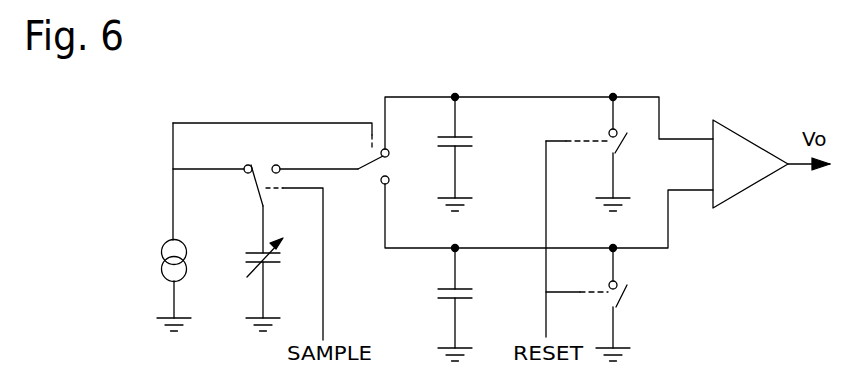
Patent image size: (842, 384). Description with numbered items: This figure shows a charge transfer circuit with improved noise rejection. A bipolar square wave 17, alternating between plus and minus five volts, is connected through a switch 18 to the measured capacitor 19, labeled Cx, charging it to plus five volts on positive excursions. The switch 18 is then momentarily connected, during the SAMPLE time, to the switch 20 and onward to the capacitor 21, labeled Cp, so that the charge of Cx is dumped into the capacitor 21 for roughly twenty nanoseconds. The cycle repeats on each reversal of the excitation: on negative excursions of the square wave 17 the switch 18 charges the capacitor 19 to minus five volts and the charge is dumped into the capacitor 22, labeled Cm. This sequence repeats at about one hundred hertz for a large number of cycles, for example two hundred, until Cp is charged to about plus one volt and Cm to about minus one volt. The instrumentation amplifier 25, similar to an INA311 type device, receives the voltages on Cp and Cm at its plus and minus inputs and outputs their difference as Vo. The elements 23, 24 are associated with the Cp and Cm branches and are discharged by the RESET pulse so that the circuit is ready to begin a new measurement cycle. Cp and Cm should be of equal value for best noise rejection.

The bipolar square wave 17 is at (163, 240).
The switch 18 is at (245, 188).
The measured capacitor 19 is at (246, 256).
The switch 20 is at (367, 180).
The capacitor 21 is at (471, 156).
The capacitor 22 is at (473, 304).
The capacitor discharge switch 23 is at (627, 155).
The capacitor discharge switch 24 is at (630, 305).
The instrumentation amplifier 25 is at (752, 137).